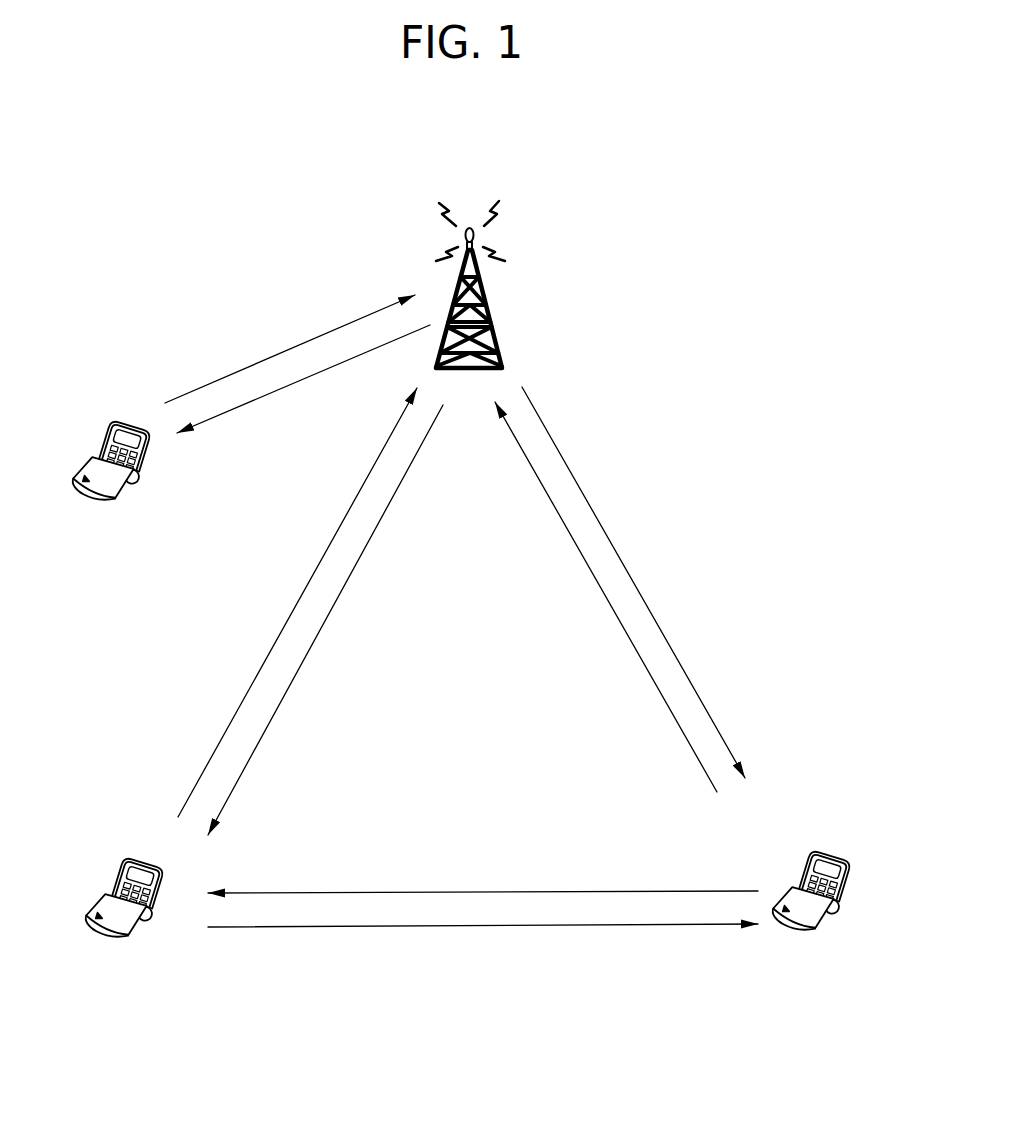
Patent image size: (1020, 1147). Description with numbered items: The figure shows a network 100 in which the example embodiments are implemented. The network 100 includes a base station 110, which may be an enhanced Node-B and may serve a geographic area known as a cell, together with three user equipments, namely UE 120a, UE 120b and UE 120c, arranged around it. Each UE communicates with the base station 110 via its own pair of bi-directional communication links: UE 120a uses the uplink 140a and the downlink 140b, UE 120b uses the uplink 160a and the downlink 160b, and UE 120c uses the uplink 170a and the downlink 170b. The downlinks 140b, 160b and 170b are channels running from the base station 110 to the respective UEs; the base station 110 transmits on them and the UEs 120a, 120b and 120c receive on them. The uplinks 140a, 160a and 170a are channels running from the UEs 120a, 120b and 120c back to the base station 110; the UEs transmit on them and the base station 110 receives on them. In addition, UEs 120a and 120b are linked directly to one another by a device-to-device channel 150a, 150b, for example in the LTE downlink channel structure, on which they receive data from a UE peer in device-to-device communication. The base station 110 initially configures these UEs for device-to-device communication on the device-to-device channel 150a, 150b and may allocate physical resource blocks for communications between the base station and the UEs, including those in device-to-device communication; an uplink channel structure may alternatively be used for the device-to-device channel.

The network 100 is at (641, 270).
The base station 110 is at (505, 228).
The UE 120a is at (118, 878).
The UE 120b is at (825, 845).
The UE 120c is at (122, 415).
The uplink 140a is at (290, 616).
The downlink 140b is at (314, 640).
The device-to-device channel 150a is at (362, 890).
The device-to-device channel 150b is at (360, 928).
The uplink 160a is at (590, 570).
The downlink 160b is at (616, 552).
The uplink 170a is at (236, 372).
The downlink 170b is at (255, 400).